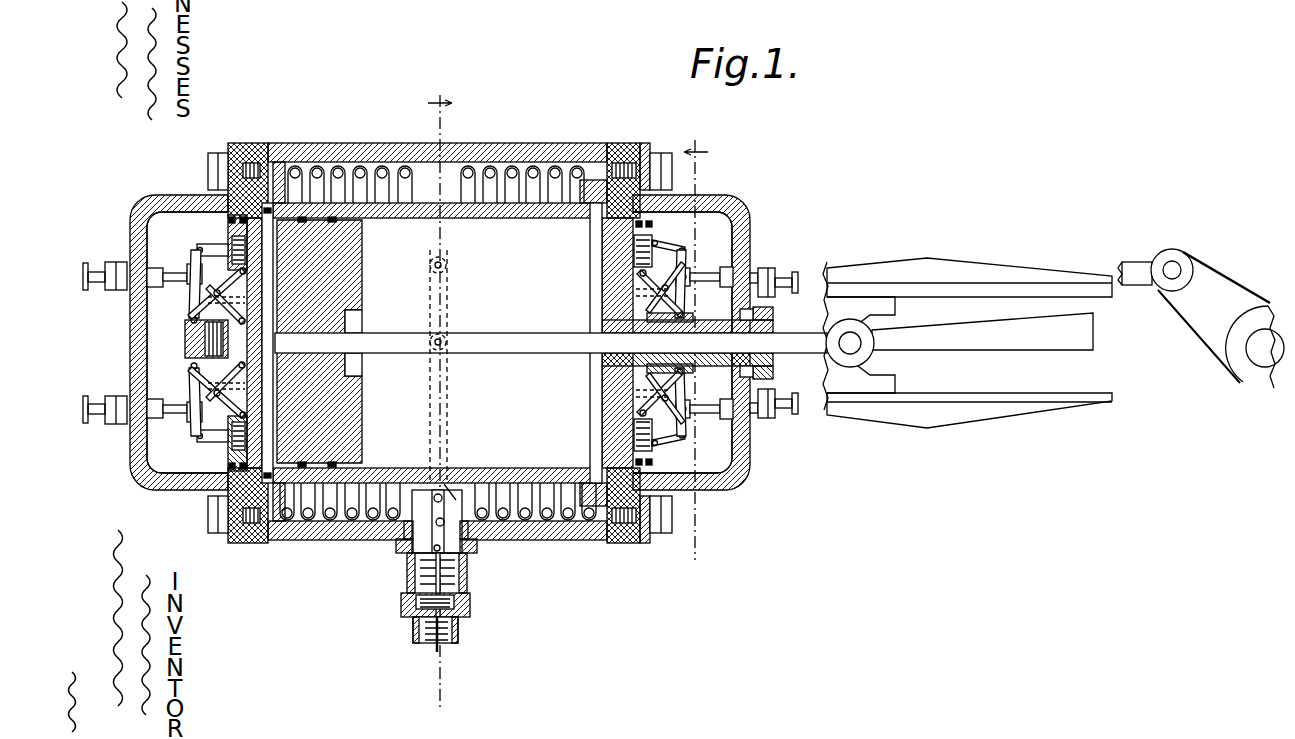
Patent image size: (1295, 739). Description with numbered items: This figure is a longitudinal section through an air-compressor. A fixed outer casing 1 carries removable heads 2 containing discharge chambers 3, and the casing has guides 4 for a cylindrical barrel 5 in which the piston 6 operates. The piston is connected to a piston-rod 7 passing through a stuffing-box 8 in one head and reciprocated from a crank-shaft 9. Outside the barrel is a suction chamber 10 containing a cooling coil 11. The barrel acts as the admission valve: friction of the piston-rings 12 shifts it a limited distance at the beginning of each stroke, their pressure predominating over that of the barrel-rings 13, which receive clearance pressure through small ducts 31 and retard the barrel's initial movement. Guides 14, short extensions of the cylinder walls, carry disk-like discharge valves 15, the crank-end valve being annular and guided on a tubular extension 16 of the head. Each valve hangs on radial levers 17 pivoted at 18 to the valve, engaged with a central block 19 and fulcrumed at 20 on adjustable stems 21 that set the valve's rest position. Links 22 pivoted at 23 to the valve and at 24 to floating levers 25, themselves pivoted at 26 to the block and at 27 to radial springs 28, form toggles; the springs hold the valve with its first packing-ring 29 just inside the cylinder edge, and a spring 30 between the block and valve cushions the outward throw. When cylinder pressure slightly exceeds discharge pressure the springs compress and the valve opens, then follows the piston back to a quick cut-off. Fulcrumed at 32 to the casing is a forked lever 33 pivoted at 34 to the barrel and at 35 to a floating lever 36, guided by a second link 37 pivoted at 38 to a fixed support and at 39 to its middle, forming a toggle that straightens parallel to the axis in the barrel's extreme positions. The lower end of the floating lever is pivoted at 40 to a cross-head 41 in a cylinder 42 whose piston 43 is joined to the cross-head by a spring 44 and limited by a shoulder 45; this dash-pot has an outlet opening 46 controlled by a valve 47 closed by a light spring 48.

The fixed outer casing 1 is at (480, 160).
The removable head 2 is at (137, 214).
The discharge chamber 3 is at (157, 222).
The guide 4 is at (334, 158).
The cylindrical barrel 5 is at (424, 160).
The piston 6 is at (357, 256).
The piston-rod 7 is at (551, 329).
The stuffing-box 8 is at (765, 292).
The crank-shaft 9 is at (1265, 340).
The suction chamber 10 is at (452, 160).
The cooling coil 11 is at (527, 160).
The piston-ring 12 is at (325, 163).
The barrel-ring 13 is at (297, 162).
The guide 14 is at (225, 515).
The discharge valve 15 is at (617, 262).
The tubular extension 16 is at (606, 360).
The radial lever 17 is at (160, 300).
The pivot 18 is at (197, 258).
The central block 19 is at (150, 346).
The fulcrum 20 is at (190, 277).
The adjustable stem 21 is at (86, 270).
The link 22 is at (250, 326).
The pivot 23 is at (358, 330).
The pivot 24 is at (185, 272).
The floating lever 25 is at (255, 300).
The pivot 26 is at (212, 310).
The pivot 27 is at (280, 275).
The radial spring 28 is at (222, 222).
The packing-ring 29 is at (214, 155).
The spring 30 is at (185, 340).
The duct 31 is at (256, 160).
The fulcrum 32 is at (448, 267).
The forked lever 33 is at (450, 396).
The pivot 34 is at (455, 326).
The pivot 35 is at (458, 495).
The floating lever 36 is at (492, 537).
The second link 37 is at (390, 535).
The pivot 38 is at (437, 487).
The pivot 39 is at (432, 503).
The pivot 40 is at (432, 574).
The cross-head 41 is at (468, 558).
The cylinder 42 is at (468, 580).
The piston 43 is at (470, 618).
The spring 44 is at (470, 605).
The shoulder 45 is at (415, 592).
The outlet opening 46 is at (460, 637).
The valve 47 is at (428, 628).
The light spring 48 is at (447, 640).